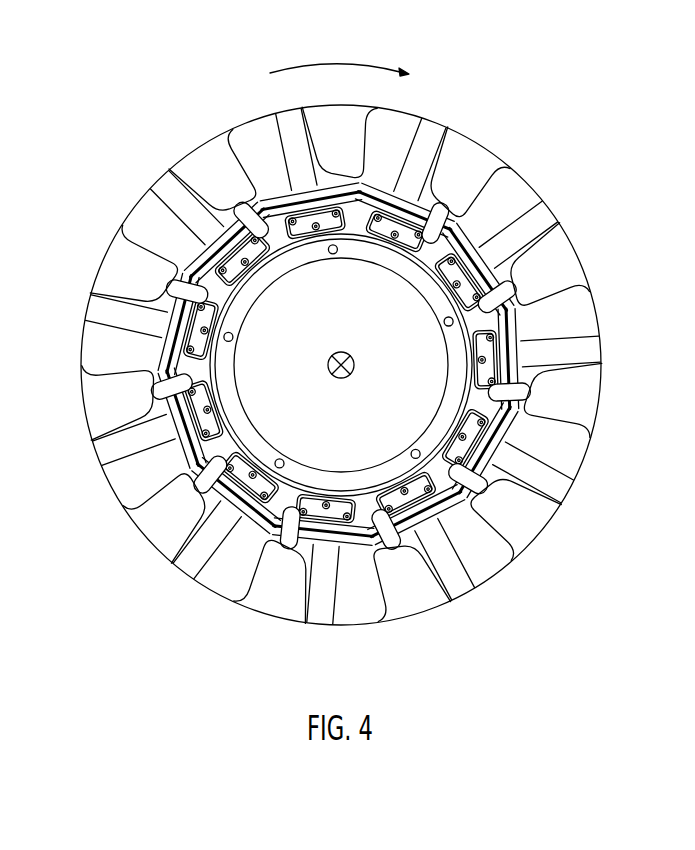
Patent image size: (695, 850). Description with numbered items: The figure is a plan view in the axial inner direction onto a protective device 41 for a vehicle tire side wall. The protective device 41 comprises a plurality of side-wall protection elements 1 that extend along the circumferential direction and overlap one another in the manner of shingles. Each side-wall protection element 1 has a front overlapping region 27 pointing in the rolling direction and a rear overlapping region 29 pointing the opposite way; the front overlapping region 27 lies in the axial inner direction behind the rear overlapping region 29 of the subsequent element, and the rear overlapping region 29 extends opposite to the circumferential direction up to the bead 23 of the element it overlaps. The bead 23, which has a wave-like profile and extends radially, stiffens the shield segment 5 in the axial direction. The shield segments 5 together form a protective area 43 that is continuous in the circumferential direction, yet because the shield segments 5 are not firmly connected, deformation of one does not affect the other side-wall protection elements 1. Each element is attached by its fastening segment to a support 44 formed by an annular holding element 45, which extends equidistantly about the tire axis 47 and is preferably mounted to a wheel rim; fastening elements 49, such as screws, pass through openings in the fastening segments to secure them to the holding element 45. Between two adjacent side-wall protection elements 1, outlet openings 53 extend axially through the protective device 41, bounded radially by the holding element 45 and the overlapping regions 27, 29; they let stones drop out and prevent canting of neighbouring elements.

The protective device 41 is at (172, 100).
The bead 23 is at (428, 133).
The side-wall protection element 1 is at (521, 197).
The front overlapping region 27 is at (558, 232).
The rear overlapping region 29 is at (572, 258).
The shield segment 5 is at (560, 300).
The outlet opening 53 is at (177, 282).
The tire axis 47 is at (340, 379).
The protective area 43 is at (467, 540).
The fastening element 49 is at (343, 520).
The support 44 is at (370, 550).
The holding element 45 is at (356, 594).